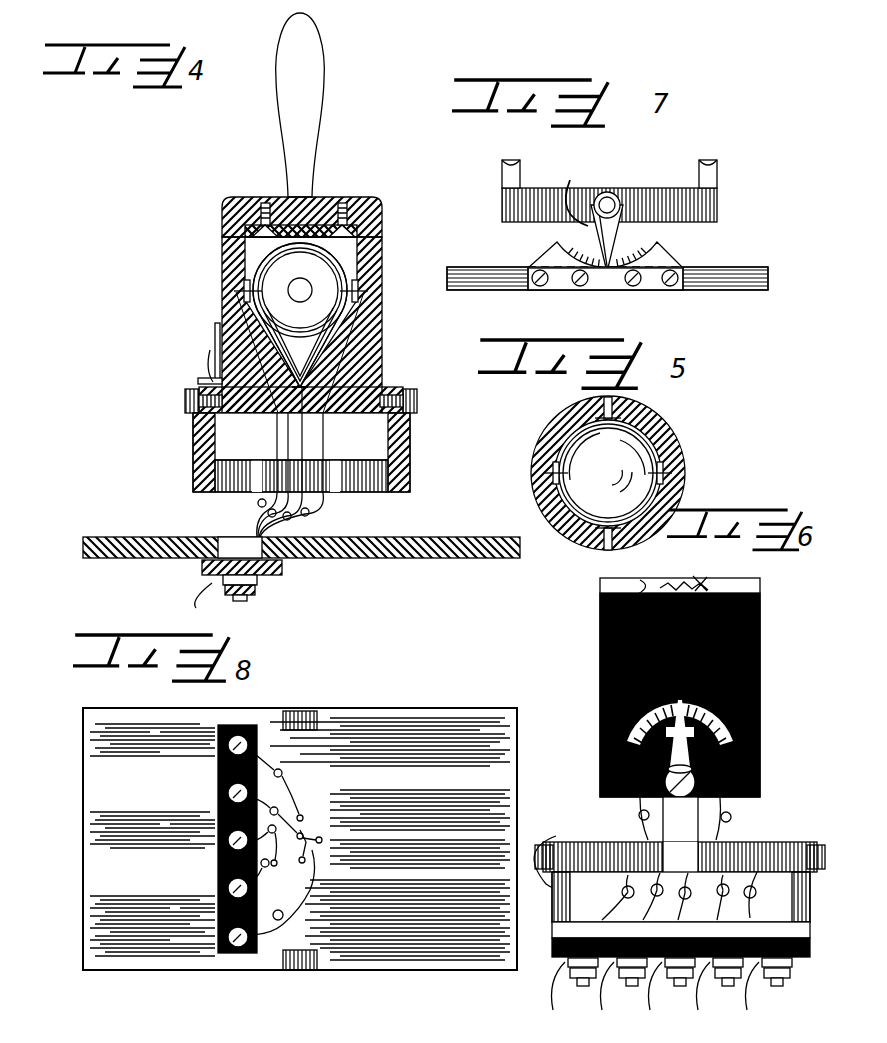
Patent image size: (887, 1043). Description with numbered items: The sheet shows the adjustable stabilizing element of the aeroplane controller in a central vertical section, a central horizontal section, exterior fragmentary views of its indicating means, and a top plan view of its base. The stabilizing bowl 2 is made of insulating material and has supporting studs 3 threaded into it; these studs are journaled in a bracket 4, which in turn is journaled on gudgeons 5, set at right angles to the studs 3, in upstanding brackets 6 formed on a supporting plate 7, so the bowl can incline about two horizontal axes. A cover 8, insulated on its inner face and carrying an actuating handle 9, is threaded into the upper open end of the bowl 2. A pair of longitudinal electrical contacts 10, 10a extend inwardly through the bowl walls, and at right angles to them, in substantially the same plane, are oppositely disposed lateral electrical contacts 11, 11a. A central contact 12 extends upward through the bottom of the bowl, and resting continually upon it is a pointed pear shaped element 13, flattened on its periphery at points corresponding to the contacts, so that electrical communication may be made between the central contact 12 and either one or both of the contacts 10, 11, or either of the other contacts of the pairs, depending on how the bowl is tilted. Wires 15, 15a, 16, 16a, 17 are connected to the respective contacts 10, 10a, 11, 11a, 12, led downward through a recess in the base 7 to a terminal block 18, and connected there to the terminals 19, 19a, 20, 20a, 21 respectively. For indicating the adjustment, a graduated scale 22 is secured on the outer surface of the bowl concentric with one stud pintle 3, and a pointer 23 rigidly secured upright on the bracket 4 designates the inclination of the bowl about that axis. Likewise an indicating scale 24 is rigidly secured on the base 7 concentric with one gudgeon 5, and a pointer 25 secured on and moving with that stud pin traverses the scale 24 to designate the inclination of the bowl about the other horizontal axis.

In FIG. 4, the stabilizing bowl 2 is at (367, 337).
In FIG. 5, the stabilizing bowl 2 is at (545, 441).
In FIG. 6, the stabilizing bowl 2 is at (598, 650).
In FIG. 4, the supporting studs 3 is at (185, 400).
In FIG. 6, the supporting studs 3 is at (660, 816).
In FIG. 4, the bracket 4 is at (403, 447).
In FIG. 7, the bracket 4 is at (717, 212).
In FIG. 6, the bracket 4 is at (772, 842).
In FIG. 7, the gudgeons 5 is at (613, 202).
In FIG. 7, the upstanding brackets 6 is at (620, 245).
In FIG. 6, the upstanding brackets 6 is at (634, 836).
In FIG. 8, the upstanding brackets 6 is at (317, 712).
In FIG. 4, the supporting plate 7 is at (410, 548).
In FIG. 7, the supporting plate 7 is at (712, 290).
In FIG. 6, the supporting plate 7 is at (800, 930).
In FIG. 8, the supporting plate 7 is at (398, 952).
In FIG. 4, the cover 8 is at (328, 204).
In FIG. 6, the cover 8 is at (643, 593).
In FIG. 4, the actuating handle 9 is at (303, 148).
In FIG. 6, the actuating handle 9 is at (686, 587).
In FIG. 4, the longitudinal electrical contact 10 is at (222, 284).
In FIG. 5, the longitudinal electrical contact 10 is at (553, 474).
In FIG. 4, the longitudinal electrical contact 10a is at (368, 290).
In FIG. 5, the longitudinal electrical contact 10a is at (672, 471).
In FIG. 5, the lateral electrical contact 11 is at (606, 551).
In FIG. 5, the lateral electrical contact 11a is at (612, 398).
In FIG. 4, the central contact 12 is at (292, 425).
In FIG. 4, the pointed pear shaped element 13 is at (327, 267).
In FIG. 5, the pointed pear shaped element 13 is at (650, 490).
In FIG. 8, the wire 15 is at (288, 803).
In FIG. 8, the wire 15a is at (309, 894).
In FIG. 8, the wire 16 is at (313, 848).
In FIG. 8, the wire 16a is at (276, 866).
In FIG. 8, the wire 17 is at (302, 820).
In FIG. 4, the terminal block 18 is at (282, 567).
In FIG. 8, the terminal block 18 is at (242, 958).
In FIG. 4, the terminal 19 is at (257, 592).
In FIG. 6, the terminal 19 is at (584, 988).
In FIG. 8, the terminal 19 is at (232, 750).
In FIG. 6, the terminal 19a is at (777, 988).
In FIG. 8, the terminal 19a is at (230, 942).
In FIG. 6, the terminal 20 is at (632, 988).
In FIG. 8, the terminal 20 is at (230, 795).
In FIG. 6, the terminal 20a is at (728, 988).
In FIG. 8, the terminal 20a is at (232, 892).
In FIG. 6, the terminal 21 is at (680, 988).
In FIG. 8, the terminal 21 is at (232, 850).
In FIG. 4, the graduated scale 22 is at (217, 323).
In FIG. 6, the graduated scale 22 is at (628, 731).
In FIG. 4, the pointer 23 is at (215, 362).
In FIG. 6, the pointer 23 is at (690, 752).
In FIG. 7, the indicating scale 24 is at (576, 288).
In FIG. 6, the indicating scale 24 is at (552, 937).
In FIG. 7, the pointer 25 is at (585, 168).
In FIG. 6, the pointer 25 is at (556, 836).